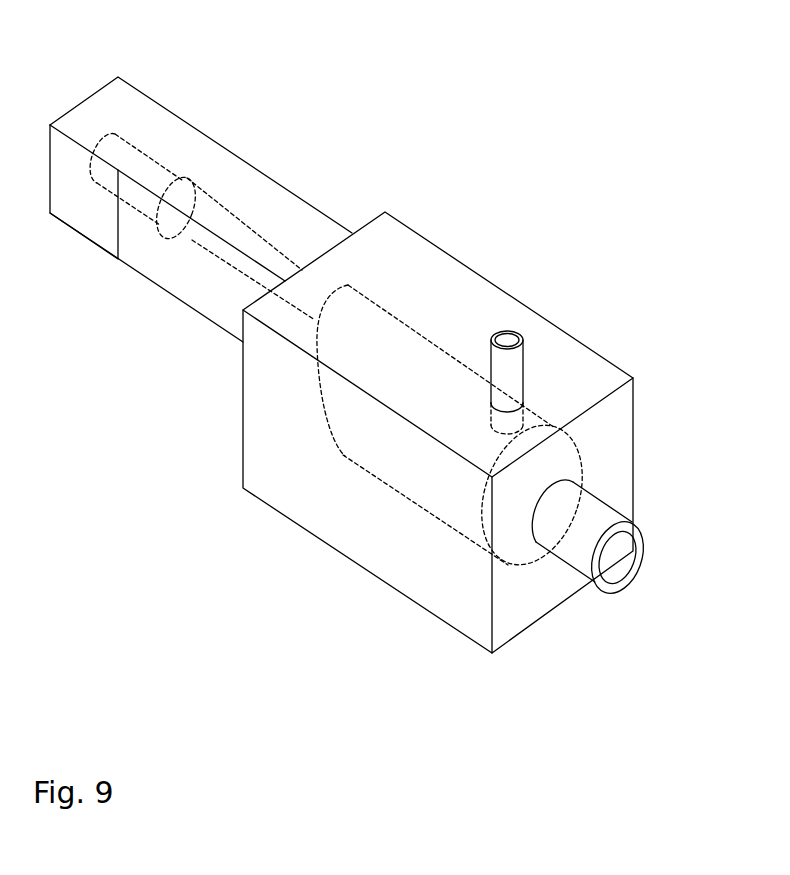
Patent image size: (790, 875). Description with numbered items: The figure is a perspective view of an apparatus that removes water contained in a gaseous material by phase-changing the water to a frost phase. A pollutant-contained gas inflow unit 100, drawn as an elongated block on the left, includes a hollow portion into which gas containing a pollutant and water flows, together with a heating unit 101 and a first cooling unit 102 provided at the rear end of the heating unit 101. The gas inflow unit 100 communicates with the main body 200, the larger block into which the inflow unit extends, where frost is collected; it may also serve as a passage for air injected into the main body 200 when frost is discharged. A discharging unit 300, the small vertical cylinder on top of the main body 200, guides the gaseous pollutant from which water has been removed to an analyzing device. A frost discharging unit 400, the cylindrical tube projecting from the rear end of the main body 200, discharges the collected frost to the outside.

The pollutant-contained gas inflow unit 100 is at (329, 133).
The heating unit 101 is at (145, 115).
The first cooling unit 102 is at (285, 205).
The main body 200 is at (423, 353).
The discharging unit 300 is at (517, 328).
The frost discharging unit 400 is at (625, 547).